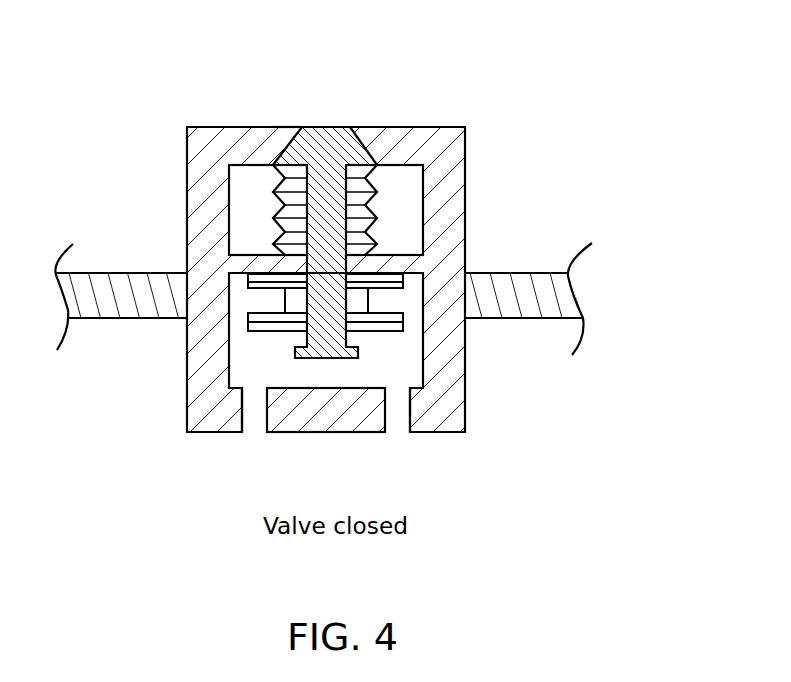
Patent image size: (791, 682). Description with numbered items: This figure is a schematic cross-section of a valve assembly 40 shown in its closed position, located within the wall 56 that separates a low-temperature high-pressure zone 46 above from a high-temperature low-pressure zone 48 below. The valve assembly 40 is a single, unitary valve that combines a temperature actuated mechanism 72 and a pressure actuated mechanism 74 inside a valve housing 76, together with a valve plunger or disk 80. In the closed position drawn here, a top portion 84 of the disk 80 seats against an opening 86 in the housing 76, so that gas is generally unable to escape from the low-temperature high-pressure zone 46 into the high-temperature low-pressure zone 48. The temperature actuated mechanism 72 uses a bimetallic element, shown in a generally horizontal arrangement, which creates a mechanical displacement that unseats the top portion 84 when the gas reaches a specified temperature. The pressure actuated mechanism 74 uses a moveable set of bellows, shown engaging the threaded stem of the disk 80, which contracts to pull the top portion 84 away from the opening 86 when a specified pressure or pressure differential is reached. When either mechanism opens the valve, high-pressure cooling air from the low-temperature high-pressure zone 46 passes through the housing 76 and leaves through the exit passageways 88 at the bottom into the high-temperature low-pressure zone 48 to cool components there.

The valve assembly 40 is at (572, 50).
The low-temperature high-pressure zone 46 is at (517, 87).
The high-temperature low-pressure zone 48 is at (523, 495).
The wall 56 is at (543, 288).
The temperature actuated mechanism 72 is at (410, 281).
The pressure actuated mechanism 74 is at (392, 192).
The valve housing 76 is at (440, 398).
The valve plunger or disk 80 is at (367, 136).
The top portion of the disk 84 is at (310, 127).
The opening 86 is at (282, 127).
The exit passageways 88 is at (252, 418).